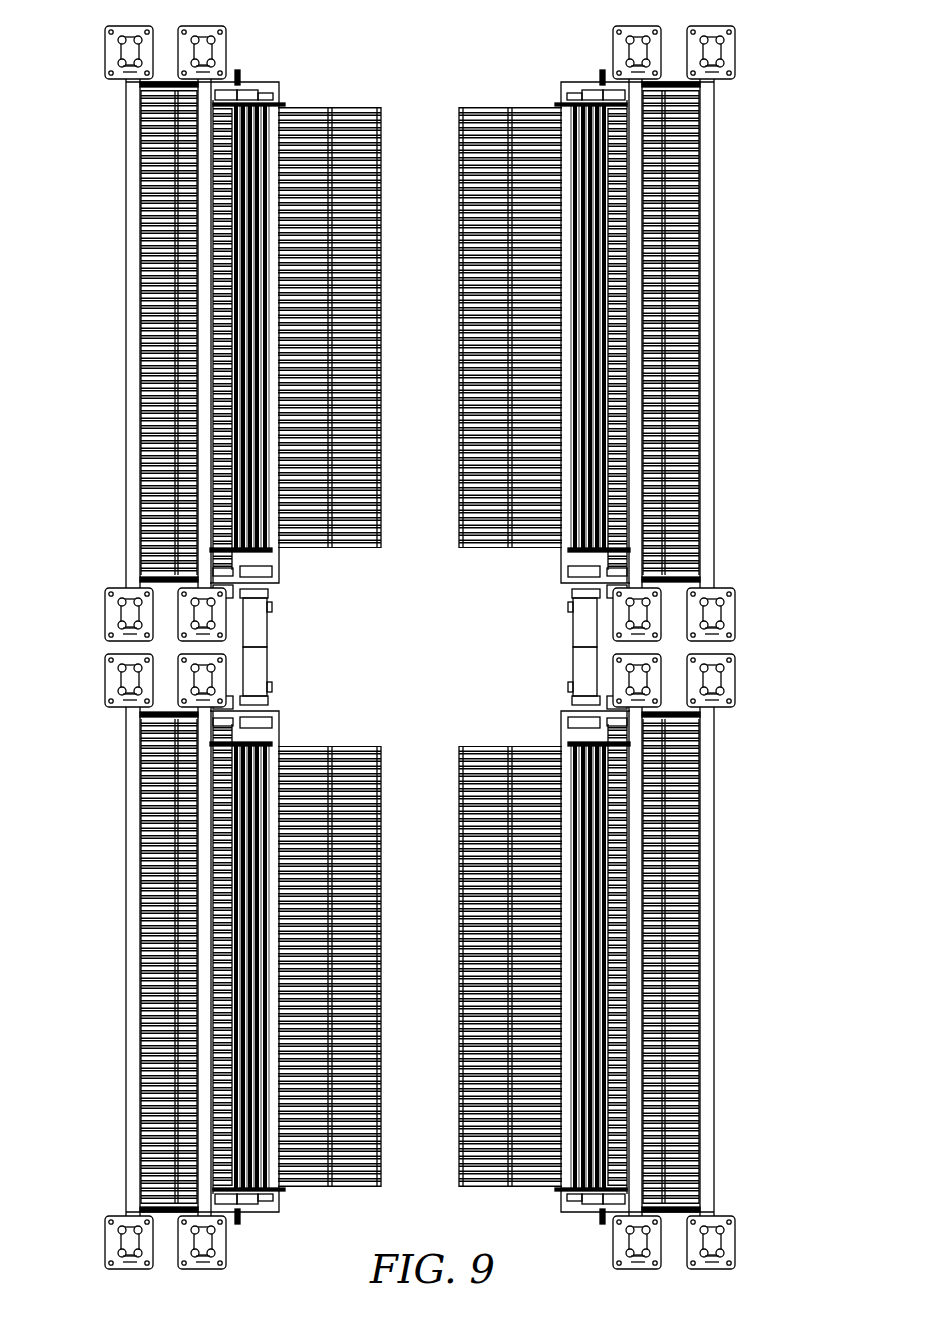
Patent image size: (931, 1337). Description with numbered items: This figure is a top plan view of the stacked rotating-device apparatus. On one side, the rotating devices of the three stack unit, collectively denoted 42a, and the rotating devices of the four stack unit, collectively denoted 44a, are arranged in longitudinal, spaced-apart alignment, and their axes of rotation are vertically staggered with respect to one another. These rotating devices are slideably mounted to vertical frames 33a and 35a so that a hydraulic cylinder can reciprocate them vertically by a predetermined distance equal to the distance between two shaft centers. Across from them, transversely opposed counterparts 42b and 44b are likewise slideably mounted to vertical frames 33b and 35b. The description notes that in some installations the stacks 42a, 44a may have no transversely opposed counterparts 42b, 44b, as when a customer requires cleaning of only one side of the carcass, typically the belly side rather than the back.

The vertical frame 33a is at (717, 52).
The vertical frame 33b is at (123, 52).
The vertical frame 35a is at (638, 52).
The vertical frame 35b is at (202, 52).
The rotating devices of the four stack unit 44a is at (504, 74).
The transversely opposed counterpart rotating devices 44b is at (336, 74).
The rotating devices of the three stack unit 42a is at (504, 710).
The transversely opposed counterpart rotating devices 42b is at (336, 710).